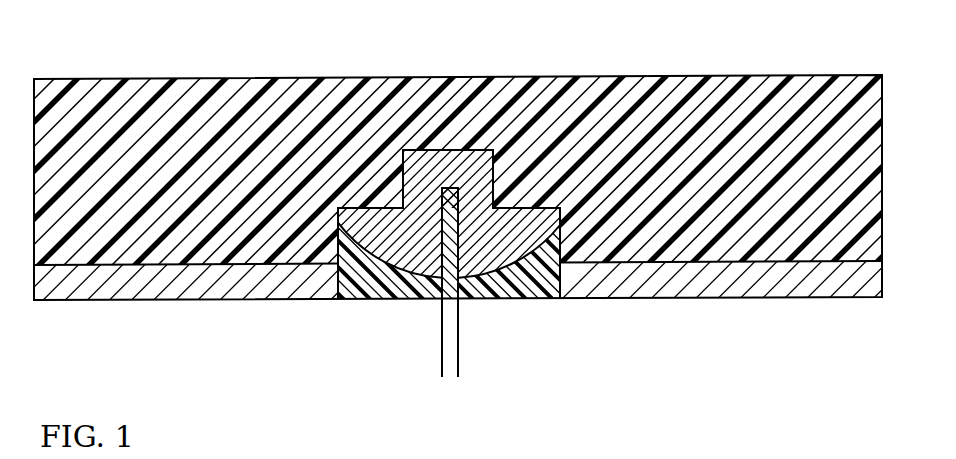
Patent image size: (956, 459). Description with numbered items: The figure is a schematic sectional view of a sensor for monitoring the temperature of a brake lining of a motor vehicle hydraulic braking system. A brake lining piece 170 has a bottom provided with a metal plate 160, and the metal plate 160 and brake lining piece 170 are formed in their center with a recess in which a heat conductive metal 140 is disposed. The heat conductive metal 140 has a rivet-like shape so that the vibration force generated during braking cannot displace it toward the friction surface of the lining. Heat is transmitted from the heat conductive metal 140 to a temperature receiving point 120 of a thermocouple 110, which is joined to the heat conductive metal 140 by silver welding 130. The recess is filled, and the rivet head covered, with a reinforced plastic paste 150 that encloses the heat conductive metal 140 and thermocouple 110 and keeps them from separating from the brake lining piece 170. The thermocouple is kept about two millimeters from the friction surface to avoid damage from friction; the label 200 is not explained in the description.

The thermocouple 110 is at (460, 337).
The temperature receiving point 120 is at (437, 277).
The silver welding 130 is at (375, 298).
The heat conductive metal 140 is at (452, 150).
The reinforced plastic paste 150 is at (542, 293).
The metal plate 160 is at (210, 286).
The brake lining piece 170 is at (720, 77).
The device 200 is at (503, 450).